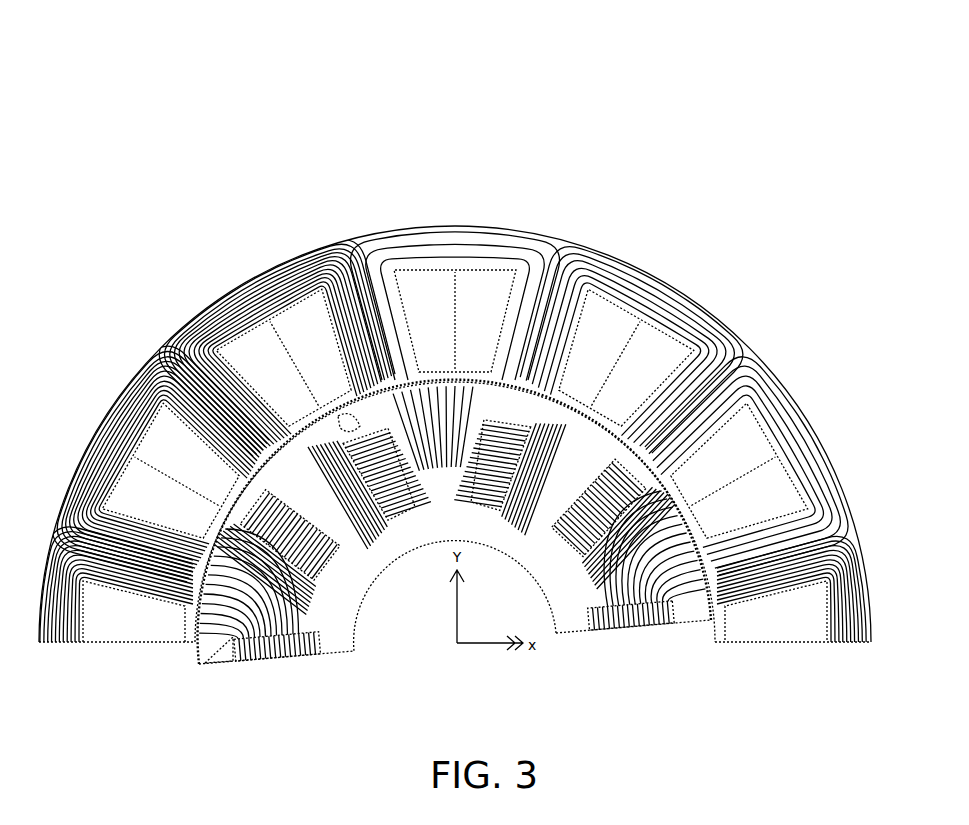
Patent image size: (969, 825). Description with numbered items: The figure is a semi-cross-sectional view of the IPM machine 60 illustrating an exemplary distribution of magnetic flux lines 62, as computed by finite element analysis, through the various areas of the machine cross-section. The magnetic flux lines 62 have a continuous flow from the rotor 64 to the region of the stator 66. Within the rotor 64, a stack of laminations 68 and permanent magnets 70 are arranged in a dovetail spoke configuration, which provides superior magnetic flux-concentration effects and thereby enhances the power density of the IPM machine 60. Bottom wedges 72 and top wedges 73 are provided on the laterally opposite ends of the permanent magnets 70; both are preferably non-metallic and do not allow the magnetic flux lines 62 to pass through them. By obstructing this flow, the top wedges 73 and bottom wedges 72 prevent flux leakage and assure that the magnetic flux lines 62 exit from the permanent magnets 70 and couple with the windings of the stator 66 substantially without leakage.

The IPM machine 60 is at (740, 84).
The magnetic flux lines 62 is at (838, 533).
The rotor 64 is at (447, 530).
The stator 66 is at (770, 646).
The stack of laminations 68 is at (236, 641).
The permanent magnets 70 is at (286, 656).
The bottom wedges 72 is at (412, 523).
The top wedges 73 is at (342, 404).